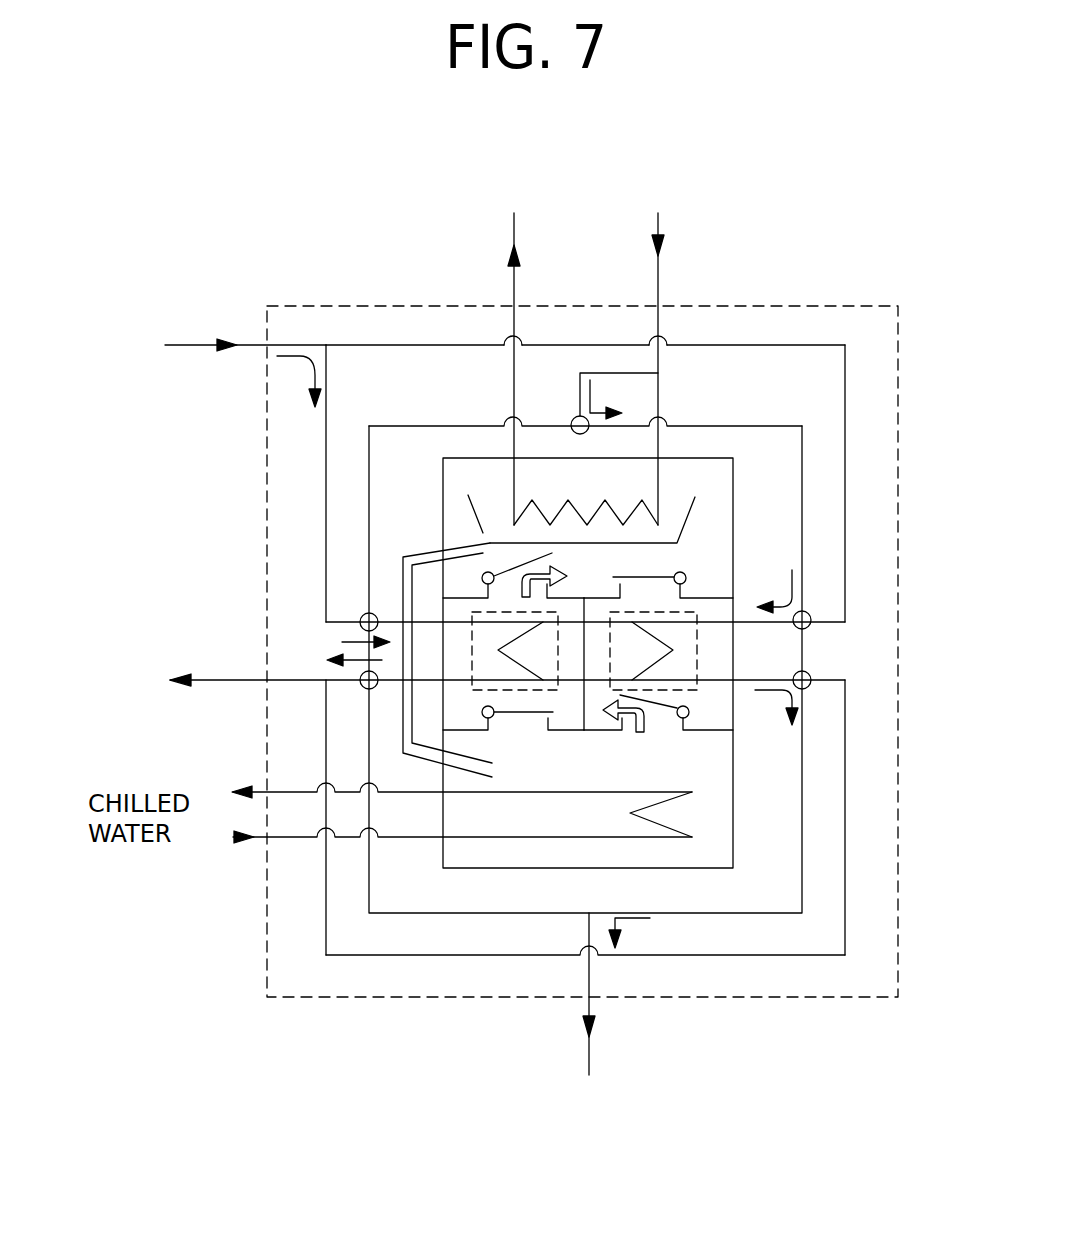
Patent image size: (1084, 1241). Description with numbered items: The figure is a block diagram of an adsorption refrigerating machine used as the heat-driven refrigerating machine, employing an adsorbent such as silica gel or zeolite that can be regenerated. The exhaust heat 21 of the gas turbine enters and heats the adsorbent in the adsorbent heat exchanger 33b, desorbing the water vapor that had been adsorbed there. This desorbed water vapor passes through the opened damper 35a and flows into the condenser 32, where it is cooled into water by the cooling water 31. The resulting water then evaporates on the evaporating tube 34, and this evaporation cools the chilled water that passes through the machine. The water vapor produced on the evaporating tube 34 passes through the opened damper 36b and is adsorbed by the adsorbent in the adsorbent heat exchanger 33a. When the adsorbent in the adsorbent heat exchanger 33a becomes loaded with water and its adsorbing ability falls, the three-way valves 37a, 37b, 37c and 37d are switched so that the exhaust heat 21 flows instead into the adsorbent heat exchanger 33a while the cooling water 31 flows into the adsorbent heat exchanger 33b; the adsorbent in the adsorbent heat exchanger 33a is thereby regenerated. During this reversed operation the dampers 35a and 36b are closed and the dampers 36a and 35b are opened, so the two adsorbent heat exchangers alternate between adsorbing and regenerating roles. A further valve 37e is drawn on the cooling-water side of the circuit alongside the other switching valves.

The exhaust heat 21 is at (250, 343).
The cooling water 31 is at (660, 226).
The condenser 32 is at (677, 500).
The adsorbent heat exchanger 33a is at (700, 651).
The adsorbent heat exchanger 33b is at (470, 652).
The evaporating tube 34 is at (670, 836).
The damper 35a is at (505, 568).
The damper 35b is at (513, 713).
The damper 36a is at (653, 578).
The damper 36b is at (688, 717).
The three-way valve 37a is at (577, 416).
The three-way valve 37b is at (361, 616).
The three-way valve 37c is at (809, 613).
The three-way valve 37d is at (362, 688).
The valve 37e is at (811, 684).